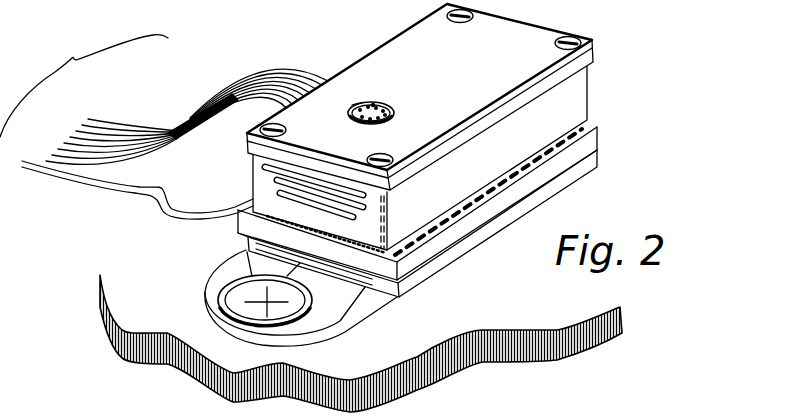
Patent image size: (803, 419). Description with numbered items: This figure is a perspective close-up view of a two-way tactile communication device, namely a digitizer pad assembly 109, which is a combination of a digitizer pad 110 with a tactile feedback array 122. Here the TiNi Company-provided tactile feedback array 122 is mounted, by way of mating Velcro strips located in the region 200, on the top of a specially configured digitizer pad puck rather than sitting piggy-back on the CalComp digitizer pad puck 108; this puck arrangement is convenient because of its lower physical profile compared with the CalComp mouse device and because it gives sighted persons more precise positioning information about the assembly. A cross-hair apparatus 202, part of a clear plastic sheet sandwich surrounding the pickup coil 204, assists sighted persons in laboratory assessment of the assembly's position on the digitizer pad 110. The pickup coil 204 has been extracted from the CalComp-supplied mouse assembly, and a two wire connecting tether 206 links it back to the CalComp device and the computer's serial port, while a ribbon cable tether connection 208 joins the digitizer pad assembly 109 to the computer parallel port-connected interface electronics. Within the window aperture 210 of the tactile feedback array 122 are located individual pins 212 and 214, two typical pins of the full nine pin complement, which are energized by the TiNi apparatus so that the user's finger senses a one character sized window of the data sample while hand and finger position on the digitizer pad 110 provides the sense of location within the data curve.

The digitizer pad puck 108 is at (597, 143).
The digitizer pad assembly 109 is at (84, 86).
The digitizer pad 110 is at (163, 365).
The tactile feedback array 122 is at (592, 72).
The region of mating Velcro strips 200 is at (499, 186).
The cross-hair apparatus 202 is at (251, 290).
The pickup coil 204 is at (290, 329).
The two wire connecting tether 206 is at (127, 190).
The ribbon cable tether connection 208 is at (173, 133).
The window aperture 210 is at (373, 103).
The pin 212 is at (422, 113).
The pin 214 is at (357, 103).